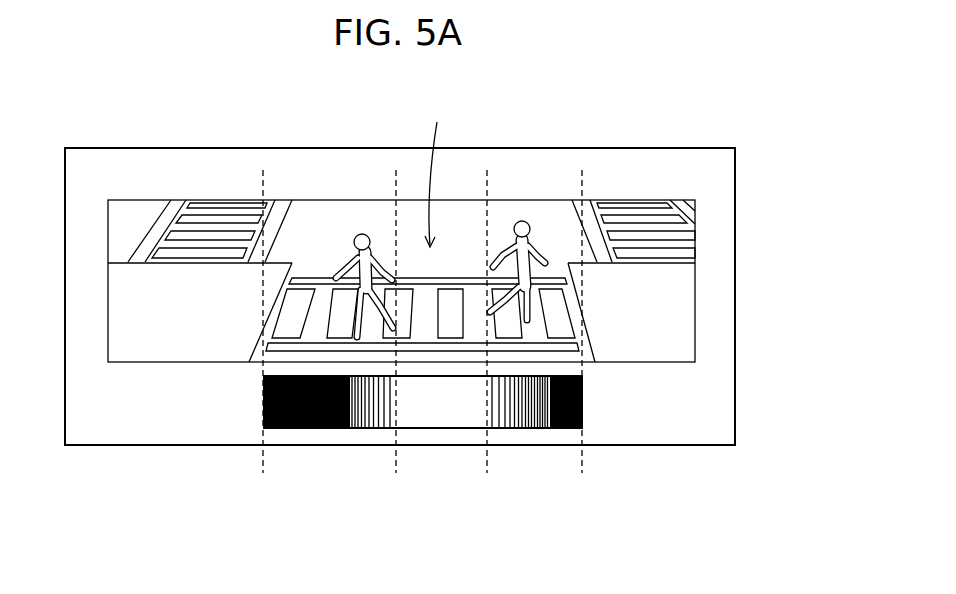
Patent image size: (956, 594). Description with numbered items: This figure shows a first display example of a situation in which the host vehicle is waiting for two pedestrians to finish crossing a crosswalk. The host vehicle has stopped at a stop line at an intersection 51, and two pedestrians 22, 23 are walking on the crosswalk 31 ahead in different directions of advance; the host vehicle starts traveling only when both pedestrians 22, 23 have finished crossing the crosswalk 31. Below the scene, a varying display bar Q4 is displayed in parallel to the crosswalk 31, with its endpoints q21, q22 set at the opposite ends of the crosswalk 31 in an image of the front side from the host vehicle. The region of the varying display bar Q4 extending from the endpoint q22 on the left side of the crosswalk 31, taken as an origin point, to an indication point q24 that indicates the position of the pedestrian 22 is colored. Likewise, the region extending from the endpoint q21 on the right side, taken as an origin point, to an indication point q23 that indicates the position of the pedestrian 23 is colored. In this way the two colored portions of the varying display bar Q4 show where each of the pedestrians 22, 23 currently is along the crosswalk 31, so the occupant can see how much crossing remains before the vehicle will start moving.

The pedestrian 22 is at (373, 236).
The pedestrian 23 is at (535, 240).
The crosswalk 31 is at (327, 280).
The intersection 51 is at (439, 170).
The varying display bar Q4 is at (538, 428).
The endpoint q21 is at (581, 337).
The endpoint q22 is at (266, 337).
The indication point q23 is at (489, 337).
The indication point q24 is at (398, 337).